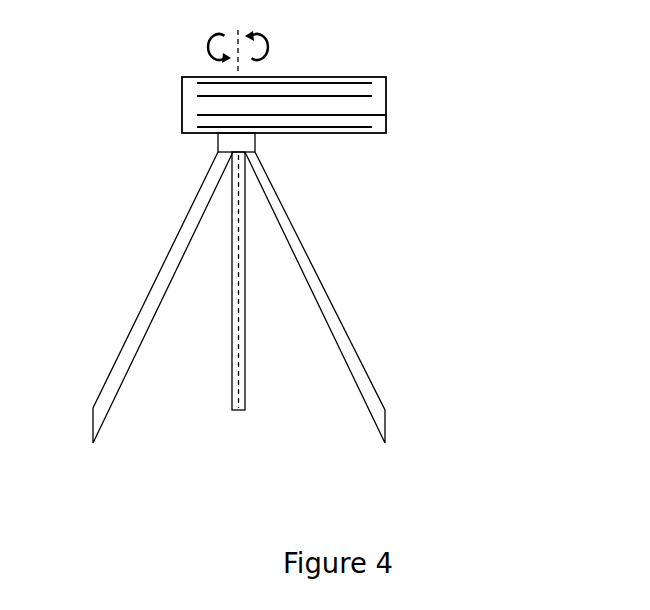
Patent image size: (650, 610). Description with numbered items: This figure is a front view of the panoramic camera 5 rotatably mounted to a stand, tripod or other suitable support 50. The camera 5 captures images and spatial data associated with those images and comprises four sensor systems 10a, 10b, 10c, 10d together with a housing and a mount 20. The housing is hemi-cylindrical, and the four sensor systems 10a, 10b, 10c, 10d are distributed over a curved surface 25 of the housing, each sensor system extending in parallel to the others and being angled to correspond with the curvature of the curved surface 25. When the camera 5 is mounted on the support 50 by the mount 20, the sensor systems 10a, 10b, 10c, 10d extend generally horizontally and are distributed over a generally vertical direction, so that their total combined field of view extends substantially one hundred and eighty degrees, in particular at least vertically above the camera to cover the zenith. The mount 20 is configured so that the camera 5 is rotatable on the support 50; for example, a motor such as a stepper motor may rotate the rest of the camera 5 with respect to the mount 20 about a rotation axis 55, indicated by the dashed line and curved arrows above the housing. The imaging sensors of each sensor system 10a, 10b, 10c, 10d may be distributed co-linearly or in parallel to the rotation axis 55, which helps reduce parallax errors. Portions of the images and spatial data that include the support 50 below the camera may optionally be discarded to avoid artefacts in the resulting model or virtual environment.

The panoramic camera 5 is at (182, 77).
The curved surface 25 is at (186, 90).
The sensor system 10a is at (323, 127).
The sensor system 10b is at (386, 115).
The sensor system 10c is at (372, 96).
The sensor system 10d is at (323, 80).
The mount 20 is at (218, 152).
The stand, tripod or other suitable support 50 is at (317, 277).
The rotation axis 55 is at (234, 38).